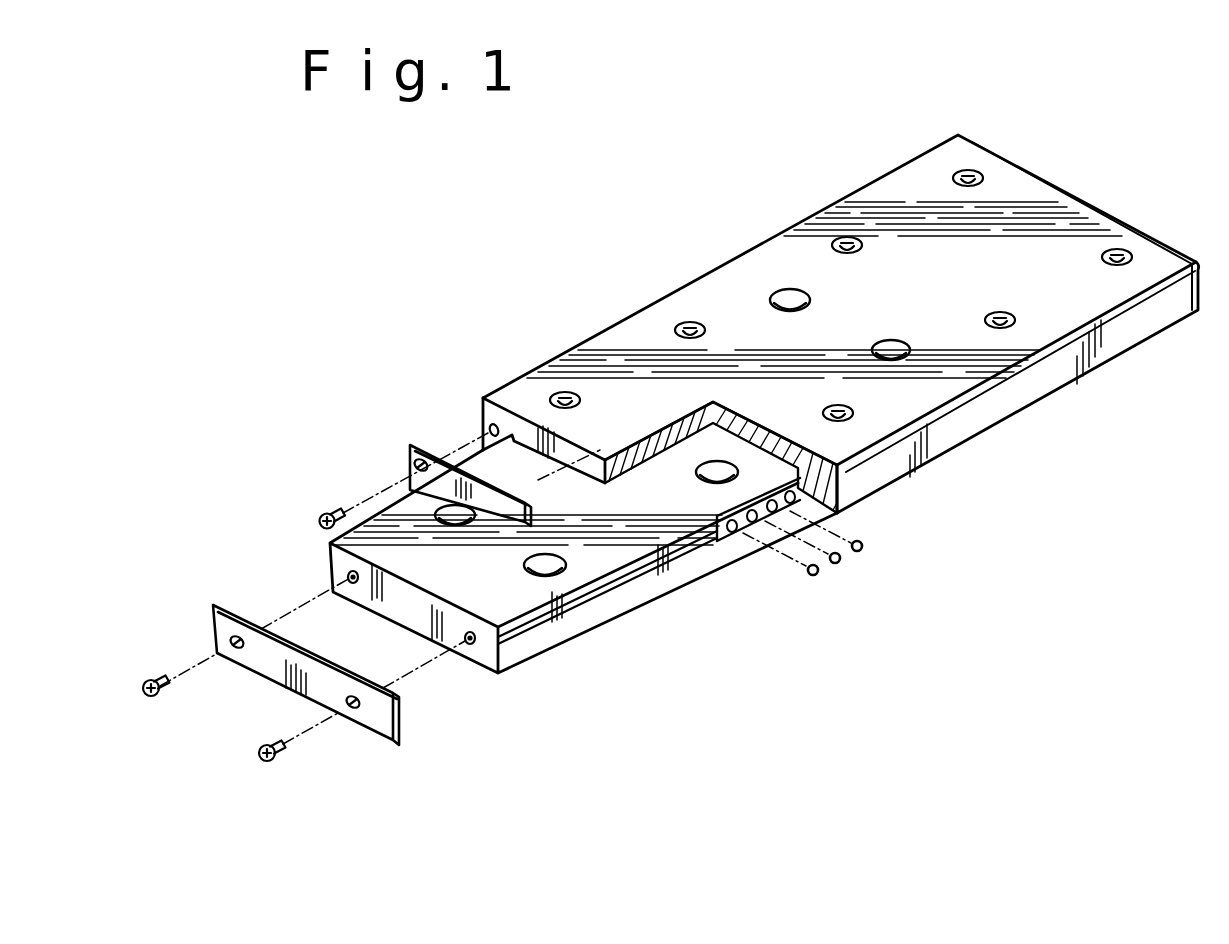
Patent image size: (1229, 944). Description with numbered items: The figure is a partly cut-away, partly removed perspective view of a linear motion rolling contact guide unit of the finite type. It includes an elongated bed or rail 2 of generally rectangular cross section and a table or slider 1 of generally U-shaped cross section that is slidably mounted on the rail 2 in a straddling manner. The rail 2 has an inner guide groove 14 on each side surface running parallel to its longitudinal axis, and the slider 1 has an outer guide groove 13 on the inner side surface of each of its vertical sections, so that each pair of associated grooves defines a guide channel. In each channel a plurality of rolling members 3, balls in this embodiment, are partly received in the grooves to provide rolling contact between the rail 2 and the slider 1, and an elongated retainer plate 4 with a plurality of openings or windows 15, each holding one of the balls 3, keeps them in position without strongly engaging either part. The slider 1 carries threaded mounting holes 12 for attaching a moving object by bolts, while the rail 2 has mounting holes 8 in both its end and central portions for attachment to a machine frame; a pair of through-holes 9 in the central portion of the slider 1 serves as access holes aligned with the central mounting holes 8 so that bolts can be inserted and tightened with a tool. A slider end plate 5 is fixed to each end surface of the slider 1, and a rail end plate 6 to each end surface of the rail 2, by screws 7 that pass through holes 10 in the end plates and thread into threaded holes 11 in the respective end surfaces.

The slider 1 is at (688, 302).
The rail 2 is at (392, 550).
The rolling members 3 is at (818, 573).
The retainer plate 4 is at (735, 540).
The slider end plate 5 is at (420, 443).
The rail end plate 6 is at (370, 717).
The screws 7 is at (320, 521).
The mounting holes 8 is at (553, 578).
The through-holes 9 is at (786, 290).
The holes 10 is at (415, 464).
The threaded holes 11 is at (492, 425).
The mounting holes 12 is at (562, 393).
The outer guide groove 13 is at (847, 503).
The inner guide groove 14 is at (623, 583).
The openings 15 is at (748, 527).